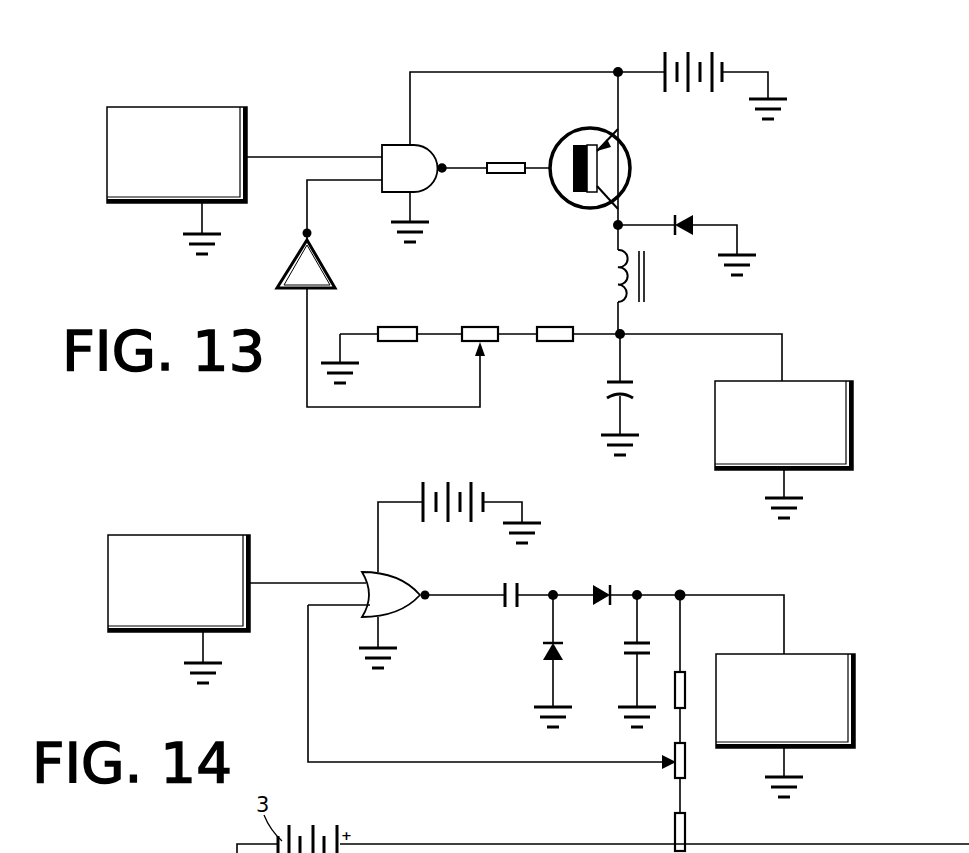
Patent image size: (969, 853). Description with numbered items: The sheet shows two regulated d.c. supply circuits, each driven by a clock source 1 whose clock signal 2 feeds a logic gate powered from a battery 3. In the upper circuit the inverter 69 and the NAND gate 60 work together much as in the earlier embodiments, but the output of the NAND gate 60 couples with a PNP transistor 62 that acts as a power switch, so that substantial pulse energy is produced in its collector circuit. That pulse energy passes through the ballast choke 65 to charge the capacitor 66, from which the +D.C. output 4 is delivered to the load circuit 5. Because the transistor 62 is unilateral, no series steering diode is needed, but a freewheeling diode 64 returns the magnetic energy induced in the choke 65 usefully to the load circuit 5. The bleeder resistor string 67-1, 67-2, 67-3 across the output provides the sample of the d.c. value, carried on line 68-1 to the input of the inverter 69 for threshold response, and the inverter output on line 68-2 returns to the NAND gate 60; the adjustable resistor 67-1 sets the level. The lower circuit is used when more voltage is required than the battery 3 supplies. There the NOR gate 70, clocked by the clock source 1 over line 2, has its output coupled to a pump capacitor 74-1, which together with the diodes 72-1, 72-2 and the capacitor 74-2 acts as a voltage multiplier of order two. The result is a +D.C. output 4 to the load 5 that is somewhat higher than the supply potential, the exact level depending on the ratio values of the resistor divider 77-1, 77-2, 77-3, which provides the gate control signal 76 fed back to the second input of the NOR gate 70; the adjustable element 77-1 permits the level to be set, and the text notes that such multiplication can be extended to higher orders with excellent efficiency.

In FIG. 13, the clock source 1 is at (212, 122).
In FIG. 14, the clock source 1 is at (213, 553).
In FIG. 13, the clock signal line 2 is at (296, 156).
In FIG. 14, the clock signal line 2 is at (287, 581).
In FIG. 13, the battery 3 is at (716, 58).
In FIG. 14, the battery 3 is at (484, 497).
In FIG. 13, the +D.C. output 4 is at (783, 345).
In FIG. 14, the +D.C. output 4 is at (786, 607).
In FIG. 13, the load circuit 5 is at (823, 400).
In FIG. 14, the load circuit 5 is at (809, 666).
In FIG. 13, the NAND gate 60 is at (428, 156).
In FIG. 13, the PNP transistor 62 is at (632, 171).
In FIG. 13, the freewheeling diode 64 is at (690, 222).
In FIG. 13, the ballast choke 65 is at (622, 284).
In FIG. 13, the capacitor 66 is at (628, 397).
In FIG. 13, the bleeder resistor 67-1 is at (485, 343).
In FIG. 13, the bleeder resistor 67-2 is at (396, 342).
In FIG. 13, the bleeder resistor 67-3 is at (556, 343).
In FIG. 13, the inverter input sample line 68-1 is at (455, 408).
In FIG. 13, the inverter output line 68-2 is at (310, 182).
In FIG. 13, the inverter 69 is at (312, 284).
In FIG. 14, the NOR gate 70 is at (405, 596).
In FIG. 14, the diode 72-1 is at (548, 657).
In FIG. 14, the diode 72-2 is at (607, 589).
In FIG. 14, the pump capacitor 74-1 is at (508, 610).
In FIG. 14, the capacitor 74-2 is at (637, 654).
In FIG. 14, the gate control signal 76 is at (472, 761).
In FIG. 14, the resistor divider element 77-1 is at (674, 771).
In FIG. 14, the resistor divider element 77-2 is at (687, 838).
In FIG. 14, the resistor divider element 77-3 is at (686, 679).